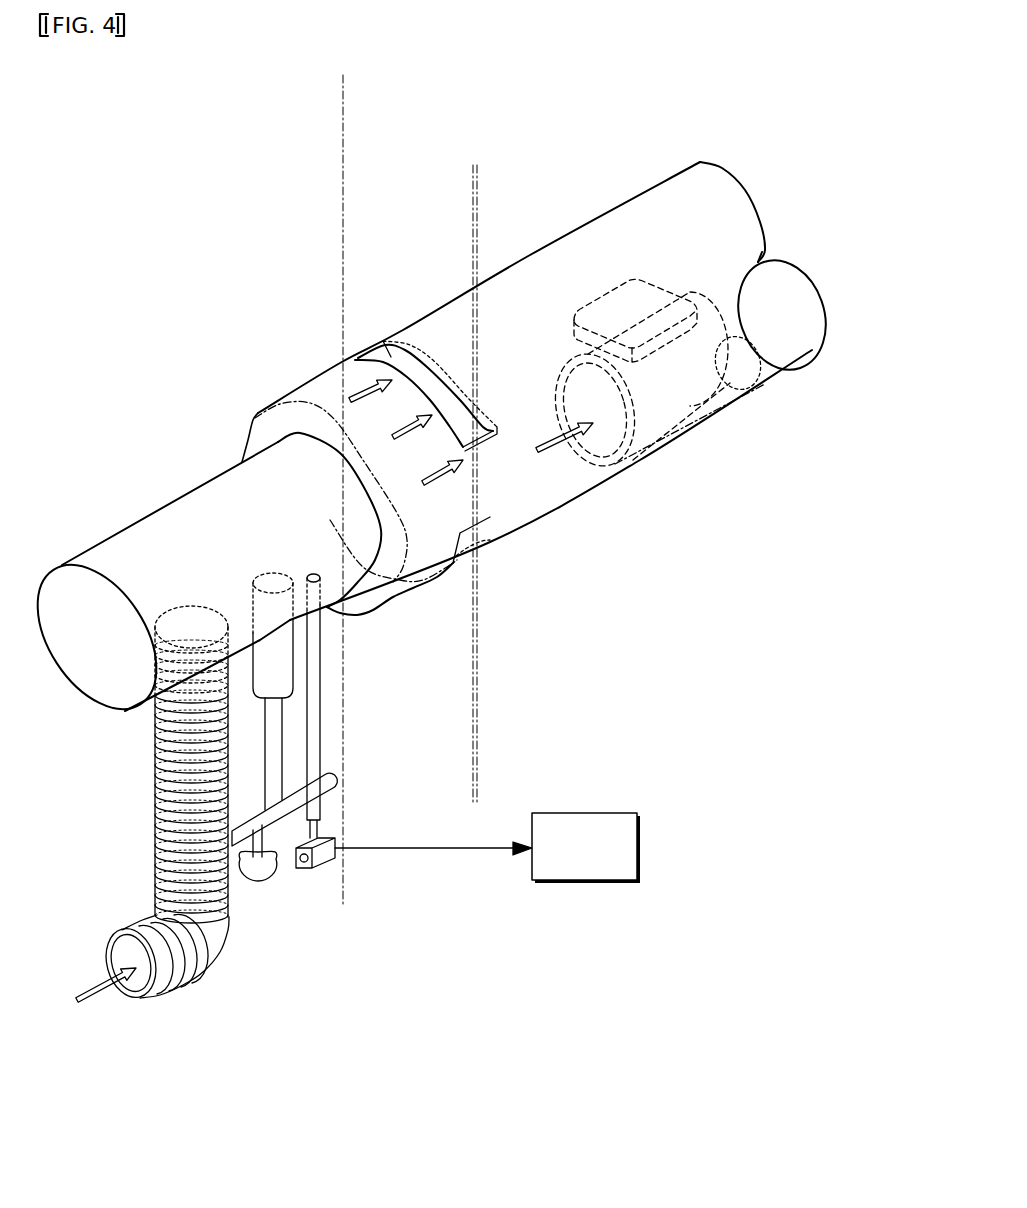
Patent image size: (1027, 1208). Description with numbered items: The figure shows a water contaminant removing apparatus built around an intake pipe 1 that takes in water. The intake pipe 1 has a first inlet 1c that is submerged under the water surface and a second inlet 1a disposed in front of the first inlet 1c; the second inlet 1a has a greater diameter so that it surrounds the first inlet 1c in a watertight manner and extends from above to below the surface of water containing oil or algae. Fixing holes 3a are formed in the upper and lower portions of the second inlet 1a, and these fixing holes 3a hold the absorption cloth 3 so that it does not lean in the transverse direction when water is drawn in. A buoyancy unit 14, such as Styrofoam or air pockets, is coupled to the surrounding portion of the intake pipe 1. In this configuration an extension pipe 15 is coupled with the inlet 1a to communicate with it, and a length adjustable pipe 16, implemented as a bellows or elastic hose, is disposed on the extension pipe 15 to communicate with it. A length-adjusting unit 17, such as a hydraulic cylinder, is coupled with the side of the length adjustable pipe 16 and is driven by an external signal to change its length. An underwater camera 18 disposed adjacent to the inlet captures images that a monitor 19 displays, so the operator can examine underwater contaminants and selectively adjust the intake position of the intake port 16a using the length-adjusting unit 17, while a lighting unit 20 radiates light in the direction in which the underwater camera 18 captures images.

The intake pipe 1 is at (531, 253).
The second inlet 1a is at (262, 426).
The first inlet 1c is at (624, 470).
The absorption cloth 3 is at (342, 240).
The fixing holes 3a is at (391, 357).
The buoyancy unit 14 is at (628, 310).
The extension pipe 15 is at (145, 527).
The length adjustable pipe 16 is at (156, 800).
The intake port 16a is at (143, 998).
The length-adjusting unit 17 is at (276, 790).
The underwater camera 18 is at (327, 868).
The monitor 19 is at (588, 813).
The lighting unit 20 is at (258, 882).